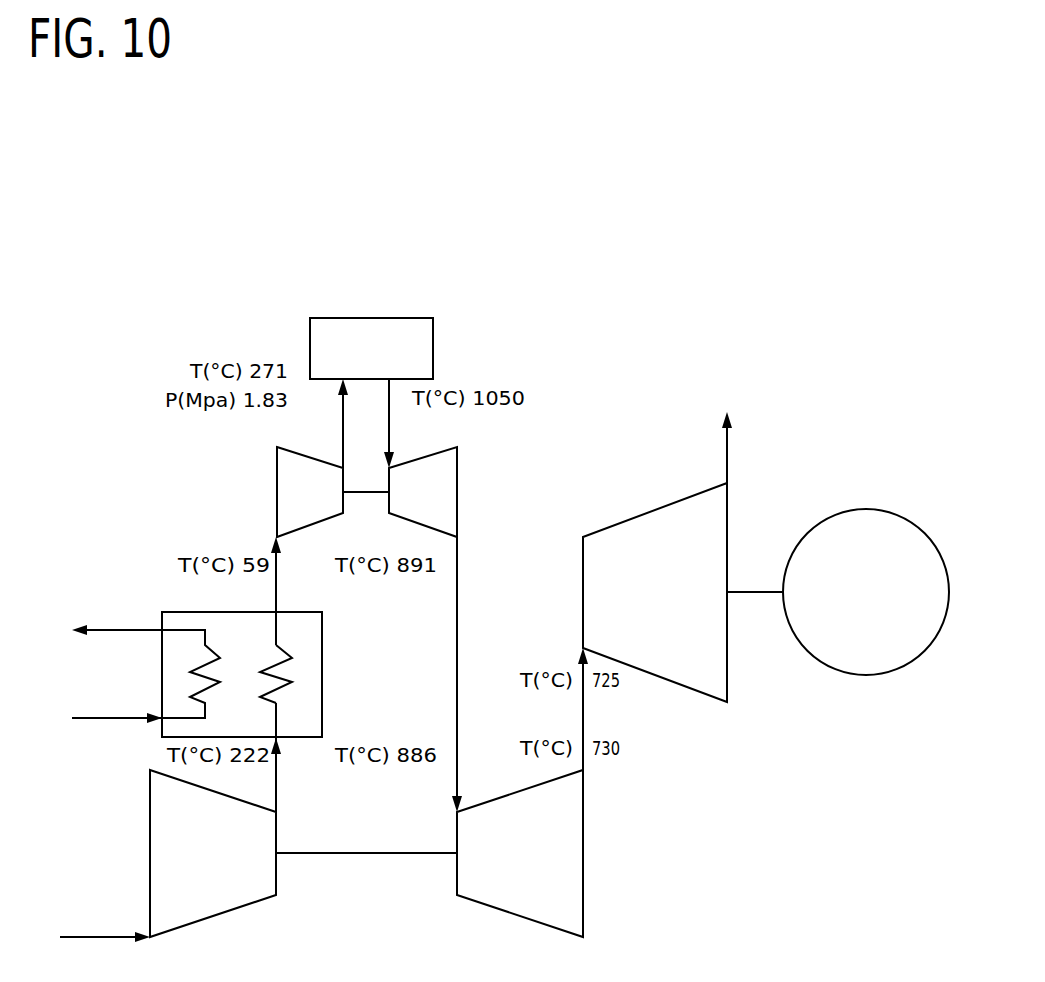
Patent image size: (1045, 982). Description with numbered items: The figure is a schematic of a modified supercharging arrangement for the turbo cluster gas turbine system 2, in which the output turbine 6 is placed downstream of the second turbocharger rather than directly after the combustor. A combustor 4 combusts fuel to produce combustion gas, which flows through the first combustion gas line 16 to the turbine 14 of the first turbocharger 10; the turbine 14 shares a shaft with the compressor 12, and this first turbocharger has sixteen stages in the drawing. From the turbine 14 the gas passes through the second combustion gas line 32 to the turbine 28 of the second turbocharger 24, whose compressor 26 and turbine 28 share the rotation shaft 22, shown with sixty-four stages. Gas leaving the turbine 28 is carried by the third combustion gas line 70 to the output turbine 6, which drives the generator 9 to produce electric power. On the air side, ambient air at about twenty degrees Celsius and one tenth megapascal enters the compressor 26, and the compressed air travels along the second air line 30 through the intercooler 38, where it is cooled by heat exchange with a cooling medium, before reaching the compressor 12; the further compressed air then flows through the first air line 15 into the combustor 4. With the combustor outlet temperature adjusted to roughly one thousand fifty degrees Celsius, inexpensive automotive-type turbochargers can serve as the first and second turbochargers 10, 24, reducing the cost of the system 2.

The turbo cluster gas turbine system 2 is at (642, 162).
The combustor 4 is at (433, 333).
The output turbine 6 is at (702, 700).
The generator 9 is at (858, 677).
The first turbocharger 10 is at (342, 485).
The compressor 12 is at (277, 497).
The turbine 14 is at (457, 490).
The first air line 15 is at (343, 433).
The first combustion gas line 16 is at (389, 423).
The rotation shaft 22 is at (356, 853).
The second turbocharger 24 is at (340, 873).
The compressor 26 is at (218, 917).
The turbine 28 is at (583, 864).
The second air line 30 is at (276, 590).
The second combustion gas line 32 is at (457, 632).
The intercooler 38 is at (322, 668).
The third combustion gas line 70 is at (583, 717).